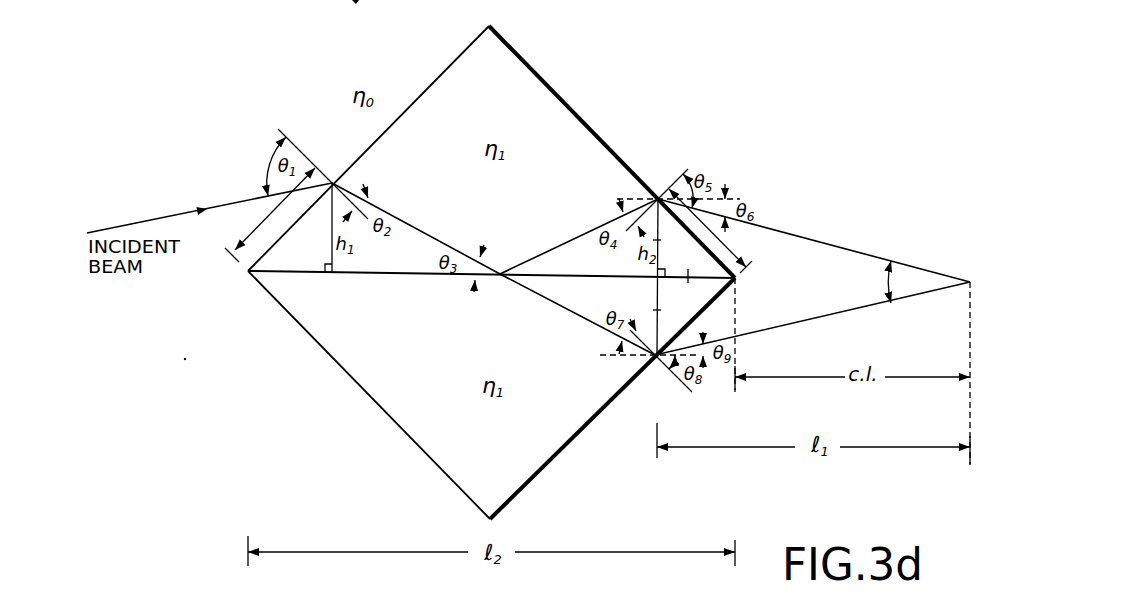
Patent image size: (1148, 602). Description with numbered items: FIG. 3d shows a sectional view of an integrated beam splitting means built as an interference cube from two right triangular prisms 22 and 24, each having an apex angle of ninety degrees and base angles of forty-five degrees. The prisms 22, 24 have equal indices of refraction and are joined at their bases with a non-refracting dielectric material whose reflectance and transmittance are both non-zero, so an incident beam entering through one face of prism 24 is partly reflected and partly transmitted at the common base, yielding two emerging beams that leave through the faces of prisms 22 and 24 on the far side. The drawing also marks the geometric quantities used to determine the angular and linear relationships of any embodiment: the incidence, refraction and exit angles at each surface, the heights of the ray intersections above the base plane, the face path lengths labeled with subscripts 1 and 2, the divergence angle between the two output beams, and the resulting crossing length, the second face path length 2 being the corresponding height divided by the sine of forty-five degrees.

The right triangular prism 22 is at (532, 66).
The right triangular prism 24 is at (385, 412).
The entrance face path length d1 1 is at (270, 215).
The exit face path length d2 2 is at (710, 231).